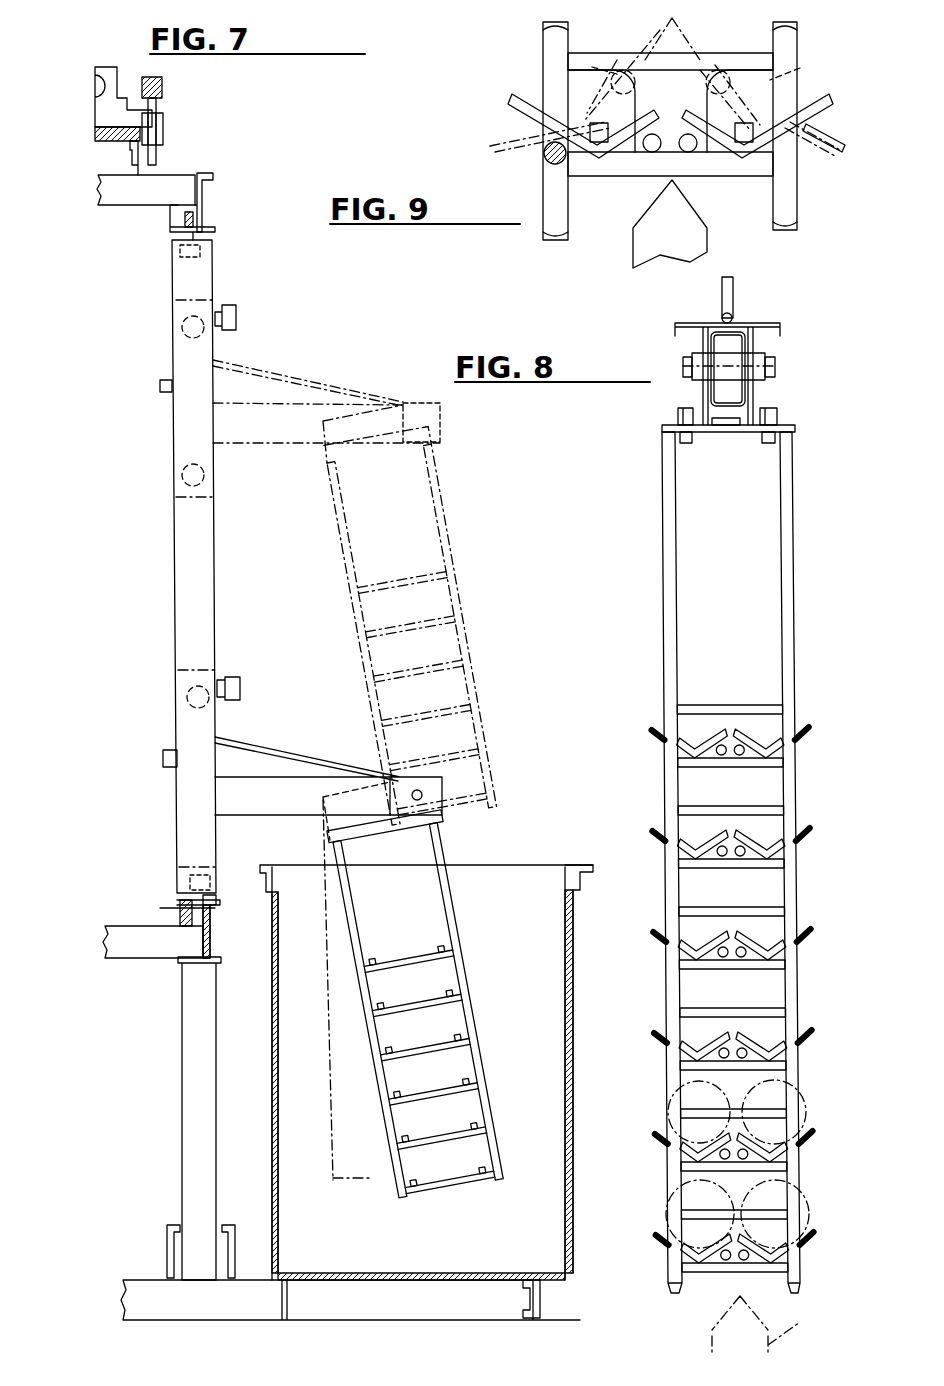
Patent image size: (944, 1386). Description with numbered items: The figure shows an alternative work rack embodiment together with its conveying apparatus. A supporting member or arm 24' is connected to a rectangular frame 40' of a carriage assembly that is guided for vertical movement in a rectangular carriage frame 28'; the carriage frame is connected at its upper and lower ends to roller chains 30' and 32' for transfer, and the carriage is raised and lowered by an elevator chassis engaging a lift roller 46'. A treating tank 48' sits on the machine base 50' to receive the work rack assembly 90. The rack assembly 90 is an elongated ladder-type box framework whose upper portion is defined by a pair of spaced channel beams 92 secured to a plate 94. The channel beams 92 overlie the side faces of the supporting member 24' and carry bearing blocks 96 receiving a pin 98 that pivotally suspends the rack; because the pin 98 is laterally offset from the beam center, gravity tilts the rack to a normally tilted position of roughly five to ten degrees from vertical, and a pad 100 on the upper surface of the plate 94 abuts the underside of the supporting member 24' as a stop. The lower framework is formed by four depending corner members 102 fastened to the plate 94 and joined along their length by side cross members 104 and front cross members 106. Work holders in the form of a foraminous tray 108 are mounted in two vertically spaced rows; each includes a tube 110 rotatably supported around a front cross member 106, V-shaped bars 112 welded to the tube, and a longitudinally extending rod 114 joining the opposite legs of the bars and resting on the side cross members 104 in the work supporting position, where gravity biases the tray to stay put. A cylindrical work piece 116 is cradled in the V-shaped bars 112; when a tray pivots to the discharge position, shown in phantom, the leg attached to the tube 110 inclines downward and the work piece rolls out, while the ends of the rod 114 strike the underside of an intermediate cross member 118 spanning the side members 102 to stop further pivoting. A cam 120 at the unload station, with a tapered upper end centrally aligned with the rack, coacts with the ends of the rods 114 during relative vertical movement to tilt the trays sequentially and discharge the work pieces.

In FIG. 7, the supporting member 24' is at (327, 577).
In FIG. 8, the supporting member 24' is at (778, 341).
In FIG. 7, the rectangular carriage frame 28' is at (148, 566).
In FIG. 7, the roller chain 30' is at (205, 158).
In FIG. 7, the roller chain 32' is at (163, 1076).
In FIG. 7, the rectangular frame 40' is at (151, 517).
In FIG. 7, the lift roller 46' is at (111, 577).
In FIG. 7, the treating tank 48' is at (355, 1092).
In FIG. 7, the machine base 50' is at (510, 1316).
In FIG. 7, the work rack assembly 90 is at (478, 648).
In FIG. 8, the work rack assembly 90 is at (800, 634).
In FIG. 7, the channel beams 92 is at (330, 452).
In FIG. 8, the channel beams 92 is at (700, 322).
In FIG. 7, the plate 94 is at (360, 838).
In FIG. 8, the plate 94 is at (796, 428).
In FIG. 8, the bearing blocks 96 is at (768, 356).
In FIG. 7, the pin 98 is at (442, 416).
In FIG. 8, the pin 98 is at (777, 366).
In FIG. 8, the pad 100 is at (732, 432).
In FIG. 9, the corner members 102 is at (545, 232).
In FIG. 8, the corner members 102 is at (792, 572).
In FIG. 9, the side cross members 104 is at (752, 178).
In FIG. 8, the side cross members 104 is at (768, 772).
In FIG. 9, the front cross members 106 is at (518, 128).
In FIG. 9, the foraminous tray 108 is at (518, 94).
In FIG. 8, the foraminous tray 108 is at (748, 735).
In FIG. 9, the tube 110 is at (580, 160).
In FIG. 9, the V-shaped bars 112 is at (822, 126).
In FIG. 8, the V-shaped bars 112 is at (655, 740).
In FIG. 9, the rod 114 is at (648, 84).
In FIG. 8, the rod 114 is at (745, 858).
In FIG. 9, the cylindrical work piece 116 is at (592, 67).
In FIG. 8, the cylindrical work piece 116 is at (680, 1110).
In FIG. 9, the intermediate cross member 118 is at (700, 62).
In FIG. 8, the intermediate cross member 118 is at (772, 712).
In FIG. 9, the cam 120 is at (690, 36).
In FIG. 8, the cam 120 is at (800, 1322).